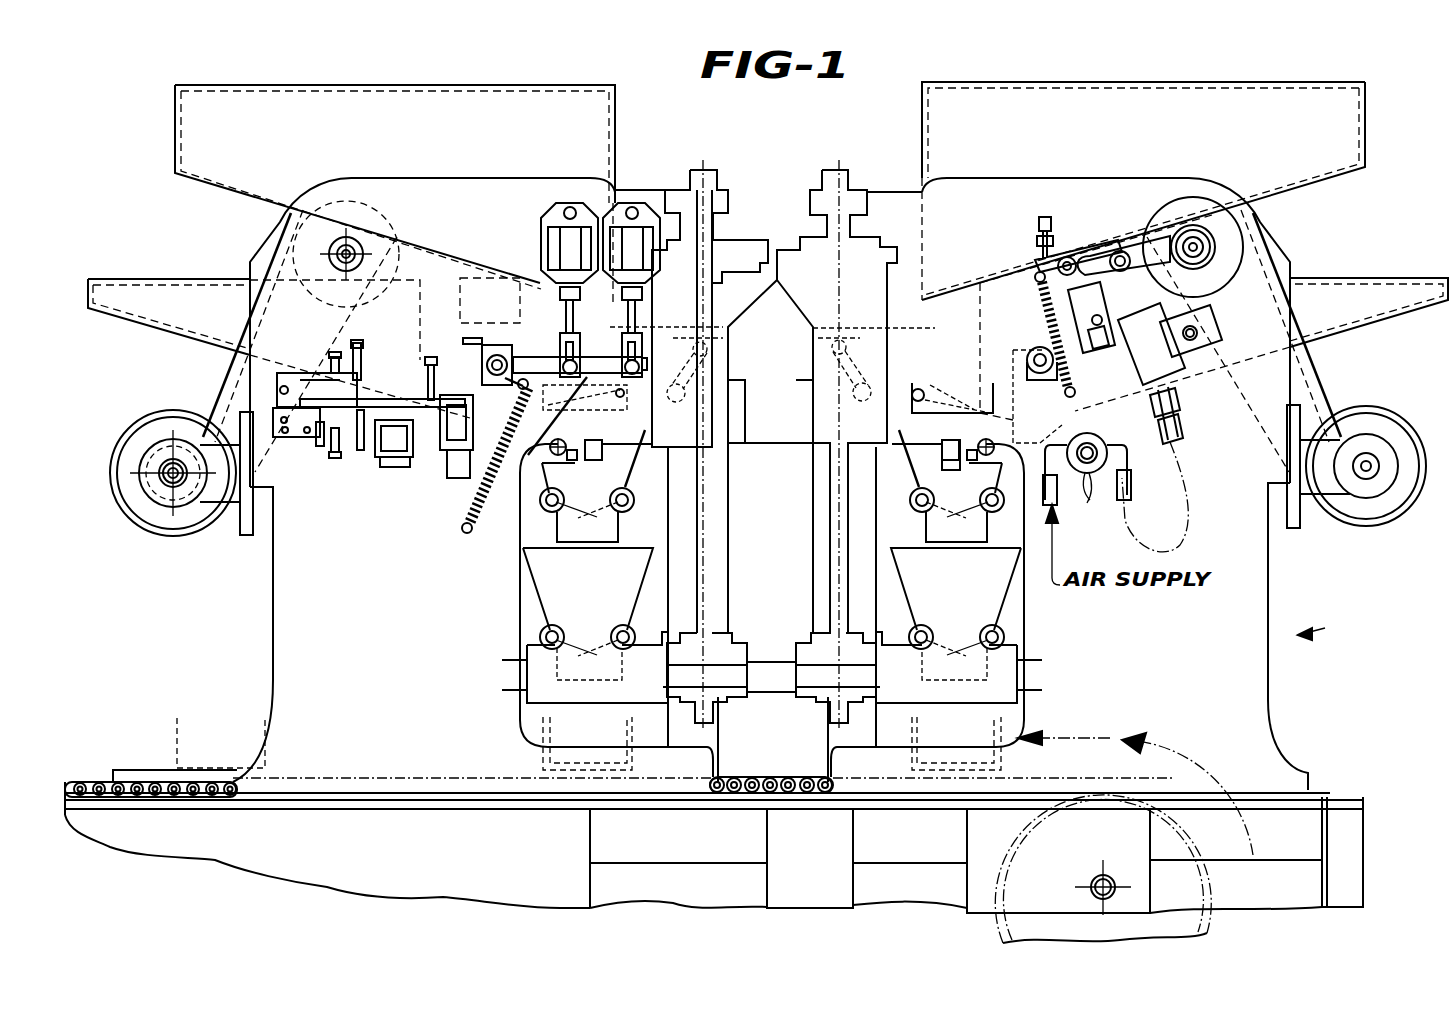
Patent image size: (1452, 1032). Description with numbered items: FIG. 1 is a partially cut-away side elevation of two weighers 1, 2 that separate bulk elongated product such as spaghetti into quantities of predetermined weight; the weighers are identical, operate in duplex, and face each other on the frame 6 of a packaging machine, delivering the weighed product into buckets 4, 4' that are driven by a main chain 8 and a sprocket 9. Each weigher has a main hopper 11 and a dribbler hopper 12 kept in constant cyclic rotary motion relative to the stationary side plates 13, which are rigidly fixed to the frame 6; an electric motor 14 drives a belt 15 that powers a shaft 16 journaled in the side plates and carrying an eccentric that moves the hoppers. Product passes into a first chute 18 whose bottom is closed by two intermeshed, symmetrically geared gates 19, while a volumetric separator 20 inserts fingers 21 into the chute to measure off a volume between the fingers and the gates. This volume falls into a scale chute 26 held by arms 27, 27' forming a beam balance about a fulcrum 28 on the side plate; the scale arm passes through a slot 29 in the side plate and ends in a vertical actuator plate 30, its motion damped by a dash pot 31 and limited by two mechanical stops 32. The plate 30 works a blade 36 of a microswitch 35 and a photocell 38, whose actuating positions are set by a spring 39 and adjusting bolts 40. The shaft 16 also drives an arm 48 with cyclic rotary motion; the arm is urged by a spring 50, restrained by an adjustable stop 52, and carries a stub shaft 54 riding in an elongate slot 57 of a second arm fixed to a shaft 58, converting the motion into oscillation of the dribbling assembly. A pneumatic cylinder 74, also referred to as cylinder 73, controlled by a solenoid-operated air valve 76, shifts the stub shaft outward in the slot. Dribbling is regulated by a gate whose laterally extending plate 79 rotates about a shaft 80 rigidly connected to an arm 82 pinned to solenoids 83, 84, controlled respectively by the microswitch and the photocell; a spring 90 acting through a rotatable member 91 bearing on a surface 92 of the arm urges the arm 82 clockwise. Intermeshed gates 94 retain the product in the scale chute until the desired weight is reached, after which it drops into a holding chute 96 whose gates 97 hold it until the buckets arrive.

The weigher 1 is at (1321, 627).
The weigher 2 is at (240, 614).
The bucket 4 is at (944, 722).
The bucket 4' is at (404, 743).
The frame 6 is at (1355, 797).
The main chain 8 is at (792, 778).
The sprocket 9 is at (1215, 897).
The main hopper 11 is at (175, 120).
The dribbler hopper 12 is at (176, 262).
The side plate 13 is at (1268, 605).
The electric motor 14 is at (165, 535).
The belt 15 is at (212, 388).
The shaft 16 is at (328, 246).
The first chute 18 is at (925, 292).
The intermeshed gates 19 is at (938, 385).
The volumetric separator 20 is at (800, 300).
The fingers 21 is at (878, 328).
The scale chute 26 is at (627, 477).
The scale arm 27 is at (441, 455).
The scale arm 27' is at (984, 484).
The fulcrum 28 is at (560, 462).
The slot 29 is at (460, 482).
The vertical plate 30 is at (320, 447).
The dash pot 31 is at (392, 455).
The mechanical stops 32 is at (428, 370).
The microswitch 35 is at (297, 440).
The blade 36 is at (300, 403).
The photocell 38 is at (298, 375).
The spring 39 is at (357, 352).
The adjusting bolts 40 is at (334, 355).
The arm 48 is at (1152, 226).
The spring 50 is at (1040, 302).
The adjustable mechanical stop 52 is at (1040, 260).
The stub shaft 54 is at (1068, 258).
The elongate slot 57 is at (1116, 251).
The shaft 58 is at (1095, 350).
The pneumatic cylinder 73 is at (1122, 252).
The pneumatic cylinder 74 is at (1172, 380).
The solenoid operated air valve 76 is at (1090, 440).
The laterally extending plate 79 is at (1052, 380).
The shaft 80 is at (497, 355).
The arm 82 is at (543, 357).
The solenoid 83 is at (541, 240).
The solenoid 84 is at (642, 205).
The spring 90 is at (480, 532).
The rotatable member 91 is at (490, 370).
The surface 92 is at (512, 345).
The intermeshed gates 94 is at (622, 513).
The holding chute 96 is at (623, 612).
The gates 97 is at (550, 628).